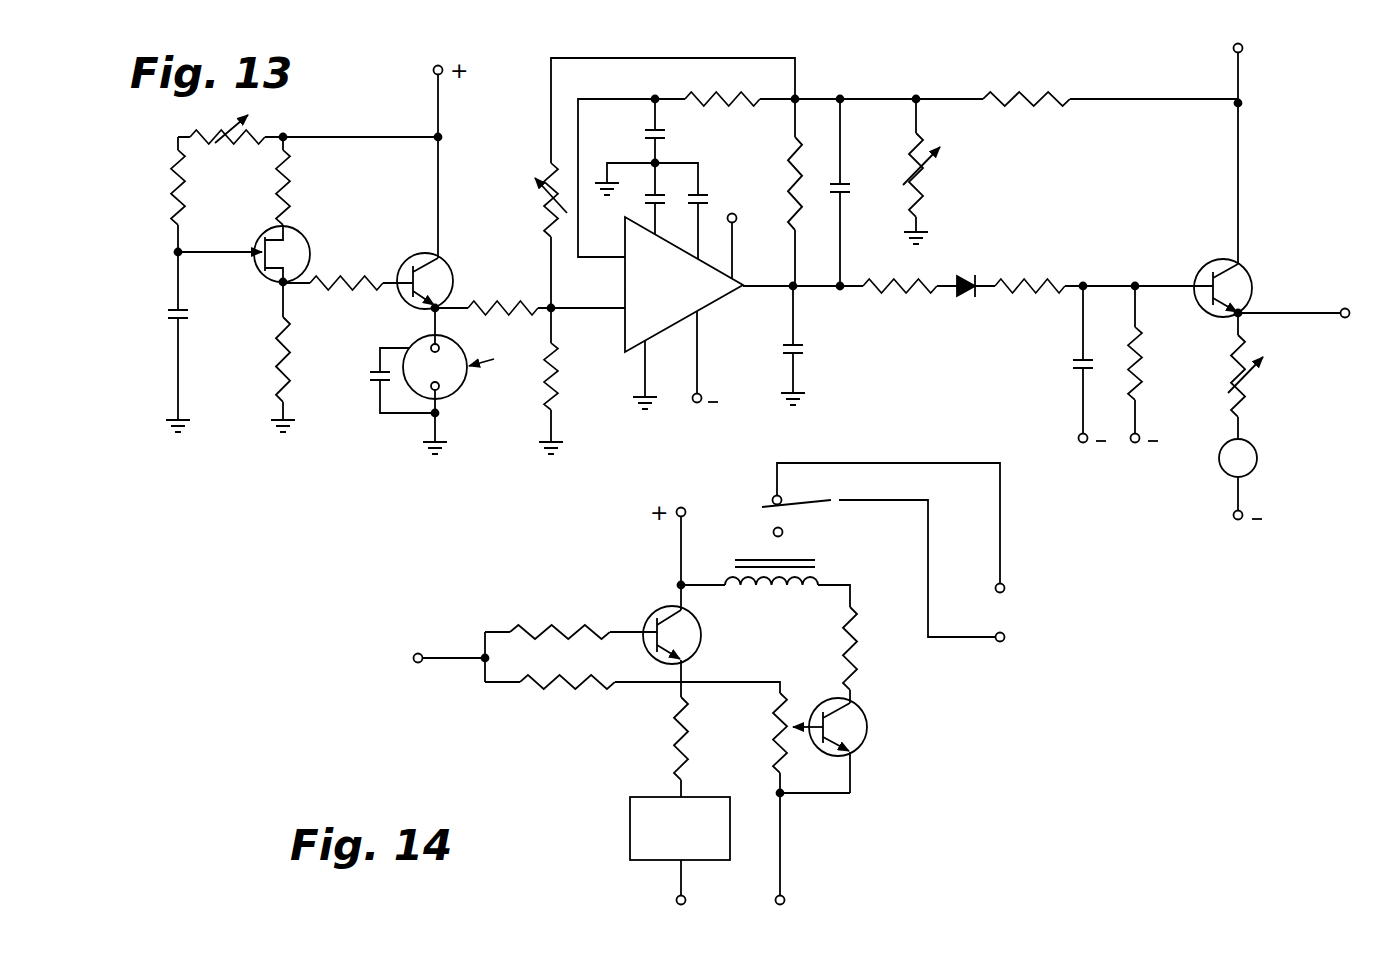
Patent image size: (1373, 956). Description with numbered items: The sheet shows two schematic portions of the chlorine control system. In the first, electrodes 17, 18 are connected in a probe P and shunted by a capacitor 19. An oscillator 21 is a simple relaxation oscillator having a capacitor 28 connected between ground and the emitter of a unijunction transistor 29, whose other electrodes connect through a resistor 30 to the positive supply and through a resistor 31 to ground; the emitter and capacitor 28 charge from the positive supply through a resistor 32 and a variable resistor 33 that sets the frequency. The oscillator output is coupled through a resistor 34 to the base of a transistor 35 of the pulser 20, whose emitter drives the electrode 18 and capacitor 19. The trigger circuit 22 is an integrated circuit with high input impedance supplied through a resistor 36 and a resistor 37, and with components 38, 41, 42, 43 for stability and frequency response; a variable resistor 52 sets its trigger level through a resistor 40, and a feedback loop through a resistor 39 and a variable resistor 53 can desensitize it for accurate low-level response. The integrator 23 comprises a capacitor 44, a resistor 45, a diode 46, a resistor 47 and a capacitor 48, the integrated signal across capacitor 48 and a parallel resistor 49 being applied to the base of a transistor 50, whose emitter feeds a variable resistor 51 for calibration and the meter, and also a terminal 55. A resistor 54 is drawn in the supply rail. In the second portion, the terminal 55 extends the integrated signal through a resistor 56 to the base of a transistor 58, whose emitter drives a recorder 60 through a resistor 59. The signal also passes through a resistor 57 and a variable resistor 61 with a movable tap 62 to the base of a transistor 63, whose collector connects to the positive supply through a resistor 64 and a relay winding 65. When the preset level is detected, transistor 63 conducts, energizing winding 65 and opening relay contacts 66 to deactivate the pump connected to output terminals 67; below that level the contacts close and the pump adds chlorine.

In FIG. 13, the electrode 17 is at (447, 392).
In FIG. 13, the electrode 18 is at (430, 345).
In FIG. 13, the capacitor 19 is at (372, 394).
In FIG. 13, the pulser 20 is at (384, 238).
In FIG. 13, the oscillator 21 is at (1258, 446).
In FIG. 13, the trigger circuit 22 is at (671, 296).
In FIG. 13, the integrator 23 is at (1044, 340).
In FIG. 13, the capacitor 28 is at (184, 326).
In FIG. 13, the unijunction transistor 29 is at (300, 232).
In FIG. 13, the resistor 30 is at (292, 166).
In FIG. 13, the resistor 31 is at (292, 352).
In FIG. 13, the resistor 32 is at (186, 170).
In FIG. 13, the variable resistor 33 is at (227, 115).
In FIG. 13, the resistor 34 is at (346, 300).
In FIG. 13, the transistor 35 is at (438, 270).
In FIG. 13, the resistor 36 is at (503, 296).
In FIG. 13, the resistor 37 is at (559, 374).
In FIG. 13, the component (capacitor) 38 is at (808, 342).
In FIG. 13, the resistor 39 is at (790, 165).
In FIG. 13, the resistor 40 is at (724, 83).
In FIG. 13, the component (capacitor) 41 is at (648, 128).
In FIG. 13, the component (capacitor) 42 is at (642, 198).
In FIG. 13, the component (capacitor) 43 is at (704, 190).
In FIG. 13, the capacitor 44 is at (845, 192).
In FIG. 13, the resistor 45 is at (903, 296).
In FIG. 13, the diode 46 is at (962, 297).
In FIG. 13, the resistor 47 is at (1030, 278).
In FIG. 13, the capacitor 48 is at (1075, 367).
In FIG. 13, the resistor 49 is at (1143, 368).
In FIG. 13, the transistor 50 is at (1215, 258).
In FIG. 13, the variable resistor 51 is at (1256, 387).
In FIG. 13, the variable resistor 52 is at (930, 181).
In FIG. 13, the variable resistor 53 is at (652, 183).
In FIG. 13, the resistor 54 is at (1032, 100).
In FIG. 13, the terminal 55 is at (1342, 308).
In FIG. 14, the terminal 55 is at (421, 651).
In FIG. 14, the resistor 56 is at (560, 628).
In FIG. 14, the resistor 57 is at (572, 690).
In FIG. 14, the transistor 58 is at (703, 647).
In FIG. 14, the resistor 59 is at (695, 735).
In FIG. 14, the recorder 60 is at (630, 812).
In FIG. 14, the variable resistor 61 is at (776, 743).
In FIG. 14, the movable tap 62 is at (800, 720).
In FIG. 14, the transistor 63 is at (872, 727).
In FIG. 14, the resistor 64 is at (858, 650).
In FIG. 14, the relay winding 65 is at (822, 585).
In FIG. 14, the relay contacts 66 is at (800, 506).
In FIG. 14, the output terminals 67 is at (1005, 612).